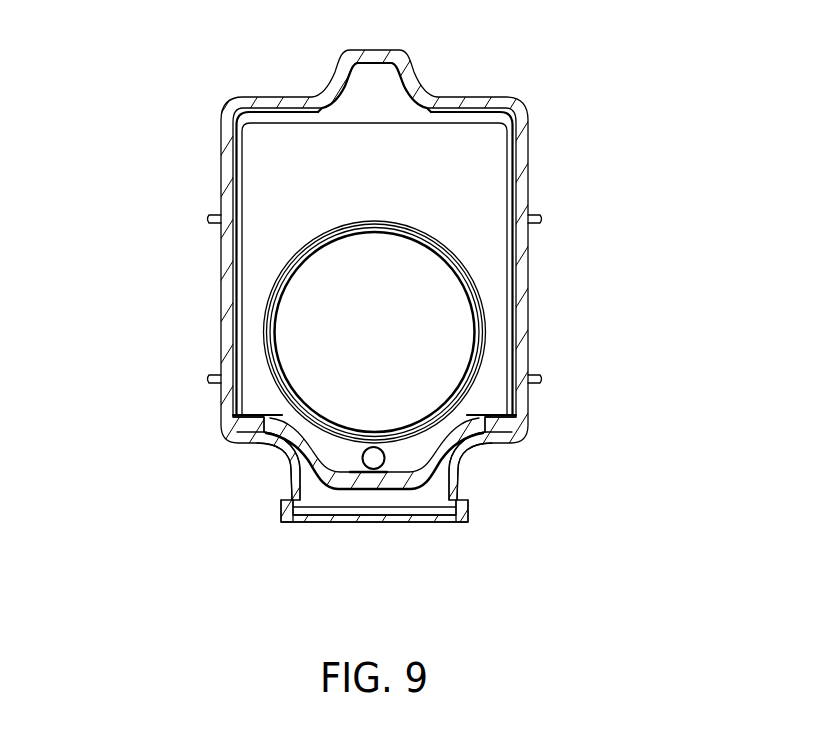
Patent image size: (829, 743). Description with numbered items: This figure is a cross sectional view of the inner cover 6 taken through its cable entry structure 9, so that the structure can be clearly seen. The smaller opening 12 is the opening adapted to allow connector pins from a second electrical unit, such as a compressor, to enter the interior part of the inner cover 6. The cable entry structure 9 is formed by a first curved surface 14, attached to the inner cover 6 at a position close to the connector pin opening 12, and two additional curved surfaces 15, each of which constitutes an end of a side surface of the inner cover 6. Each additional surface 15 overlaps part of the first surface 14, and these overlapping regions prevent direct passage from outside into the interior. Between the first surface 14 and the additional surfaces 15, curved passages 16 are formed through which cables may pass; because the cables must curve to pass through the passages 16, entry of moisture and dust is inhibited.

The inner cover 6 is at (660, 209).
The smaller opening 12 is at (333, 310).
The first curved surface 14 is at (428, 465).
The additional curved surfaces 15 is at (262, 442).
The passages 16 is at (285, 455).
The cable entry structure 9 is at (398, 518).